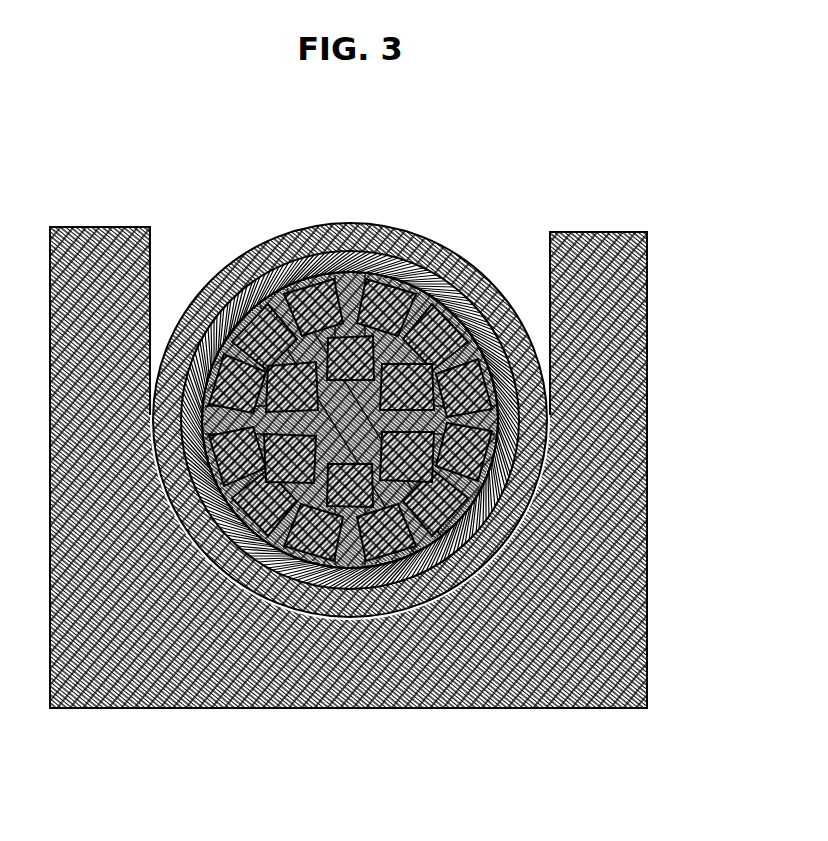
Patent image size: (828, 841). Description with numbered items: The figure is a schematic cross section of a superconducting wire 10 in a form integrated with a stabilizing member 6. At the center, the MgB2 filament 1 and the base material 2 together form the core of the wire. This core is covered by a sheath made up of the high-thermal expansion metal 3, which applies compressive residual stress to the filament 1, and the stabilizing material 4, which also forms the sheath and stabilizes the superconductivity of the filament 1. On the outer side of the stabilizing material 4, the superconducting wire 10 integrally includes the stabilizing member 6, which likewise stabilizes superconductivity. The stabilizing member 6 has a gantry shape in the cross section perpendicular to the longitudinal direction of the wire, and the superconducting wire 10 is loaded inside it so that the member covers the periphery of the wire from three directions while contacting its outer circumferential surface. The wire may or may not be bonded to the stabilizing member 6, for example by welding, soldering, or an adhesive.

The MgB2 filament 1 is at (480, 392).
The base material 2 is at (500, 422).
The high-thermal expansion metal 3 is at (510, 455).
The stabilizing material 4 is at (512, 512).
The stabilizing member 6 is at (577, 623).
The superconducting wire 10 is at (280, 220).